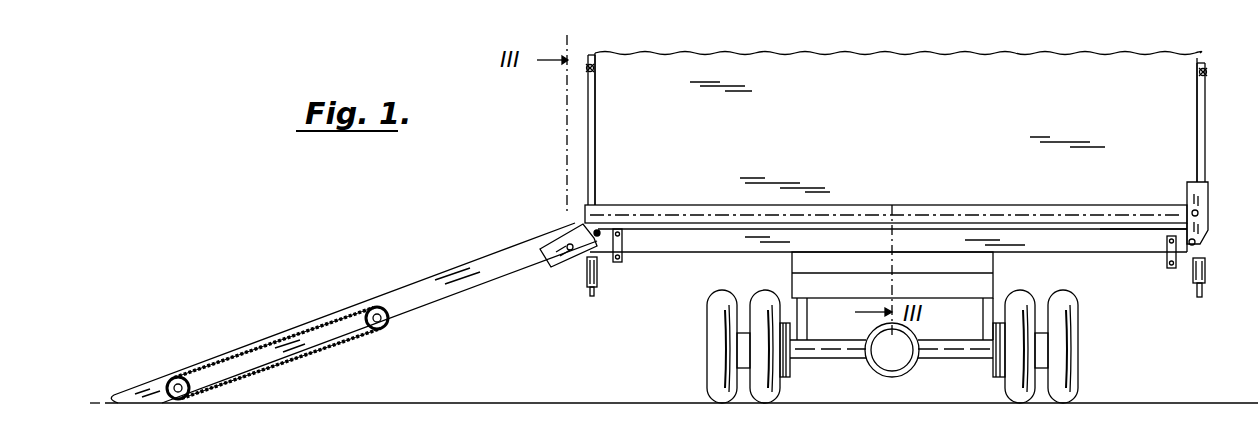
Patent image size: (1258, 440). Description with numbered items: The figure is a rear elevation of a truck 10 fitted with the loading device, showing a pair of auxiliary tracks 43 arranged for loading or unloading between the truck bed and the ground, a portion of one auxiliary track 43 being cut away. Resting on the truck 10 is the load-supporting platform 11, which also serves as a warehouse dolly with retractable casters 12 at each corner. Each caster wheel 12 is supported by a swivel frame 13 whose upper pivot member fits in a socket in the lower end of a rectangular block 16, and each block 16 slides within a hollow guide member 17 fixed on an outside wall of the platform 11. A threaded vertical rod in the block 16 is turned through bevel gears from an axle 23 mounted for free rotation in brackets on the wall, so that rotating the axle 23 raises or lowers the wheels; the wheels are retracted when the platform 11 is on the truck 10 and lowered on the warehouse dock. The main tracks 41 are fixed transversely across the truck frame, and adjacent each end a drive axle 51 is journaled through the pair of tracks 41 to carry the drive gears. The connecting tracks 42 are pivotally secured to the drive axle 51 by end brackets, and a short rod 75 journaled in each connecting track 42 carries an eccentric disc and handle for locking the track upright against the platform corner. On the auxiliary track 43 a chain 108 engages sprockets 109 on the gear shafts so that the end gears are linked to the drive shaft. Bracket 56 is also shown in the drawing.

The truck 10 is at (810, 284).
The load-supporting platform 11 is at (935, 135).
The retractable caster 12 is at (596, 290).
The swivel frame 13 is at (590, 273).
The rectangular block 16 is at (588, 186).
The hollow guide member 17 is at (588, 148).
The axle 23 is at (586, 70).
The main track 41 is at (1108, 231).
The connecting track 42 is at (553, 262).
The auxiliary track 43 is at (440, 288).
The drive axle 51 is at (598, 232).
The bracket 56 is at (623, 235).
The short rod 75 is at (567, 245).
The chain 108 is at (293, 338).
The sprocket 109 is at (378, 307).